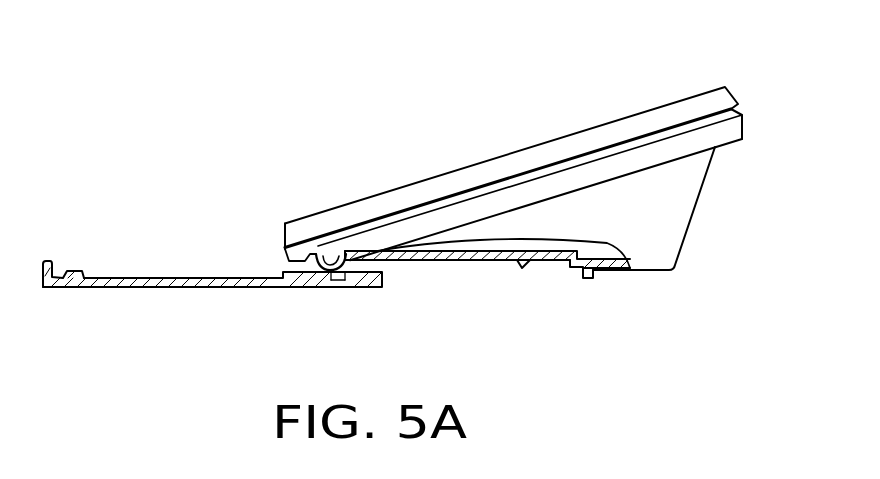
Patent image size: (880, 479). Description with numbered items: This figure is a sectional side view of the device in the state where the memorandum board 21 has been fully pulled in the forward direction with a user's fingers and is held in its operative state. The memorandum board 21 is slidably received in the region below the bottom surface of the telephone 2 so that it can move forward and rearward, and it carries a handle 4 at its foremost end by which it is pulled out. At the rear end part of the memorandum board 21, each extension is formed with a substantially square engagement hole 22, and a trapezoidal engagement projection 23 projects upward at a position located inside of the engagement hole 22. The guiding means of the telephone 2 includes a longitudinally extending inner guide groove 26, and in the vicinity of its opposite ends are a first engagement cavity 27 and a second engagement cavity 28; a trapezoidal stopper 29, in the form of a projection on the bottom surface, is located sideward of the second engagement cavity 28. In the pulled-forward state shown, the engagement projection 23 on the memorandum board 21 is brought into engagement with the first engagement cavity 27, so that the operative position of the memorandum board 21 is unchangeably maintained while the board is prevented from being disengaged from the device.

The telephone 2 is at (702, 212).
The handle 4 is at (46, 260).
The memorandum board 21 is at (164, 265).
The engagement hole 22 is at (343, 274).
The engagement projection 23 is at (333, 274).
The inner guide groove 26 is at (430, 262).
The first engagement cavity 27 is at (321, 252).
The second engagement cavity 28 is at (540, 264).
The trapezoidal stopper 29 is at (587, 281).